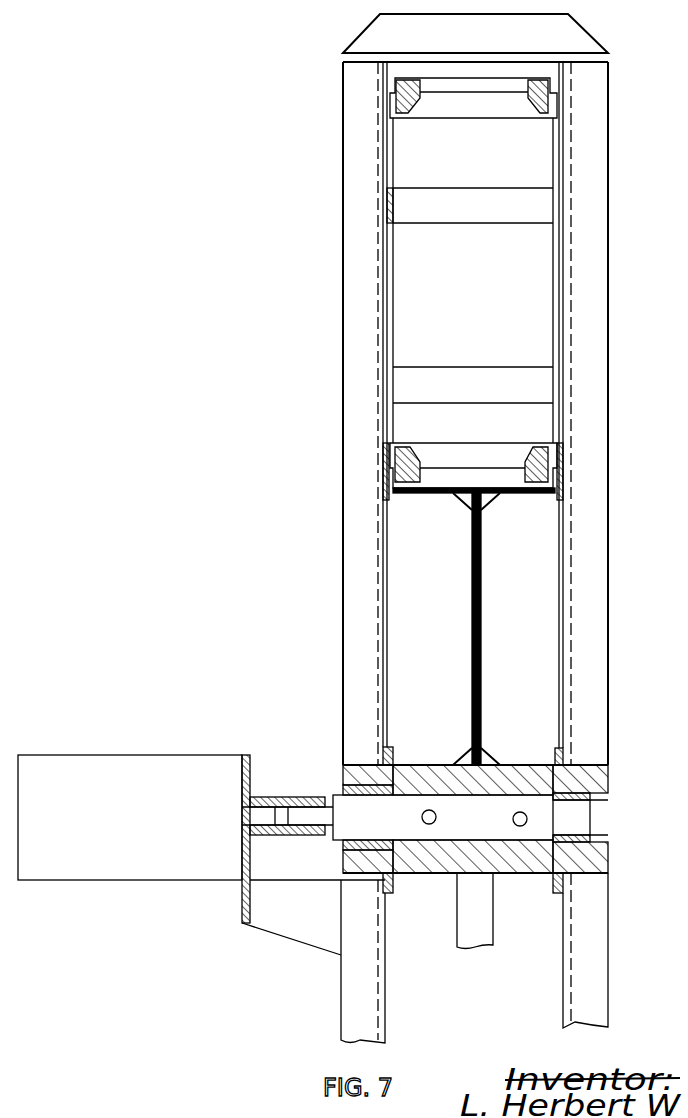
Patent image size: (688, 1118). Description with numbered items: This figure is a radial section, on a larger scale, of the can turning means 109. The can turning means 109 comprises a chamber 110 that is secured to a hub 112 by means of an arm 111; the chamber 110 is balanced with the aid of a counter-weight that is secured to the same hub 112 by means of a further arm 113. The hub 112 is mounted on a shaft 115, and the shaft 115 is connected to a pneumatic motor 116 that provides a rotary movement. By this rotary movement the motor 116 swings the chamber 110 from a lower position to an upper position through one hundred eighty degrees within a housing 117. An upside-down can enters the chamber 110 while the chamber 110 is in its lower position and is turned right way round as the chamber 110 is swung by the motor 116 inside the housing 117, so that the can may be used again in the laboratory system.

The can turning means 109 is at (343, 302).
The chamber 110 is at (543, 208).
The arm 111 is at (481, 638).
The hub 112 is at (529, 866).
The arm 113 is at (463, 928).
The shaft 115 is at (540, 832).
The pneumatic motor 116 is at (172, 762).
The housing 117 is at (600, 333).